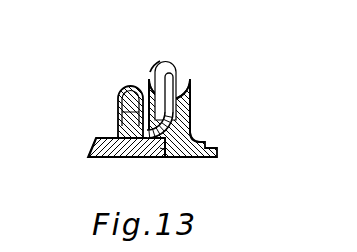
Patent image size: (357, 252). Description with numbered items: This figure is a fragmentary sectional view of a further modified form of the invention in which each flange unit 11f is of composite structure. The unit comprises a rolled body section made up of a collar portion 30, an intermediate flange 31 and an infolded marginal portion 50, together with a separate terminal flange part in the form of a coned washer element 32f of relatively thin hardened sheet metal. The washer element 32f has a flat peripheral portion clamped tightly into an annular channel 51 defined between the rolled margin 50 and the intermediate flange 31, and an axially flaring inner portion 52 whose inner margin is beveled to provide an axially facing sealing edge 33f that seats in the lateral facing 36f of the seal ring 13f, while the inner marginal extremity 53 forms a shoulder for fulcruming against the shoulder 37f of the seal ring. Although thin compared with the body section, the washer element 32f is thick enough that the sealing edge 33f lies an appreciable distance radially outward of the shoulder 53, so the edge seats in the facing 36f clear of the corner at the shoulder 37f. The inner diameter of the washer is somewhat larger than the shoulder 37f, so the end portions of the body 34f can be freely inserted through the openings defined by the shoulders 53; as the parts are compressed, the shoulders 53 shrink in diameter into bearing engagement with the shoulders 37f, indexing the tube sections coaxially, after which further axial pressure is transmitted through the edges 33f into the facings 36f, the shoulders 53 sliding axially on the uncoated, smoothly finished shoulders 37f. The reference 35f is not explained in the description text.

The flange unit 11f is at (194, 130).
The seal ring 13f is at (88, 148).
The collar portion 30 is at (219, 147).
The intermediate flange 31 is at (191, 104).
The coned washer element 32f is at (178, 80).
The sealing edge 33f is at (127, 116).
The body 34f is at (118, 150).
The post side wall 35f is at (148, 85).
The lateral facing 36f is at (127, 92).
The shoulder 37f is at (112, 136).
The infolded marginal portion 50 is at (149, 82).
The annular channel 51 is at (167, 72).
The axially flaring inner portion 52 is at (122, 104).
The inner marginal extremity 53 is at (146, 150).